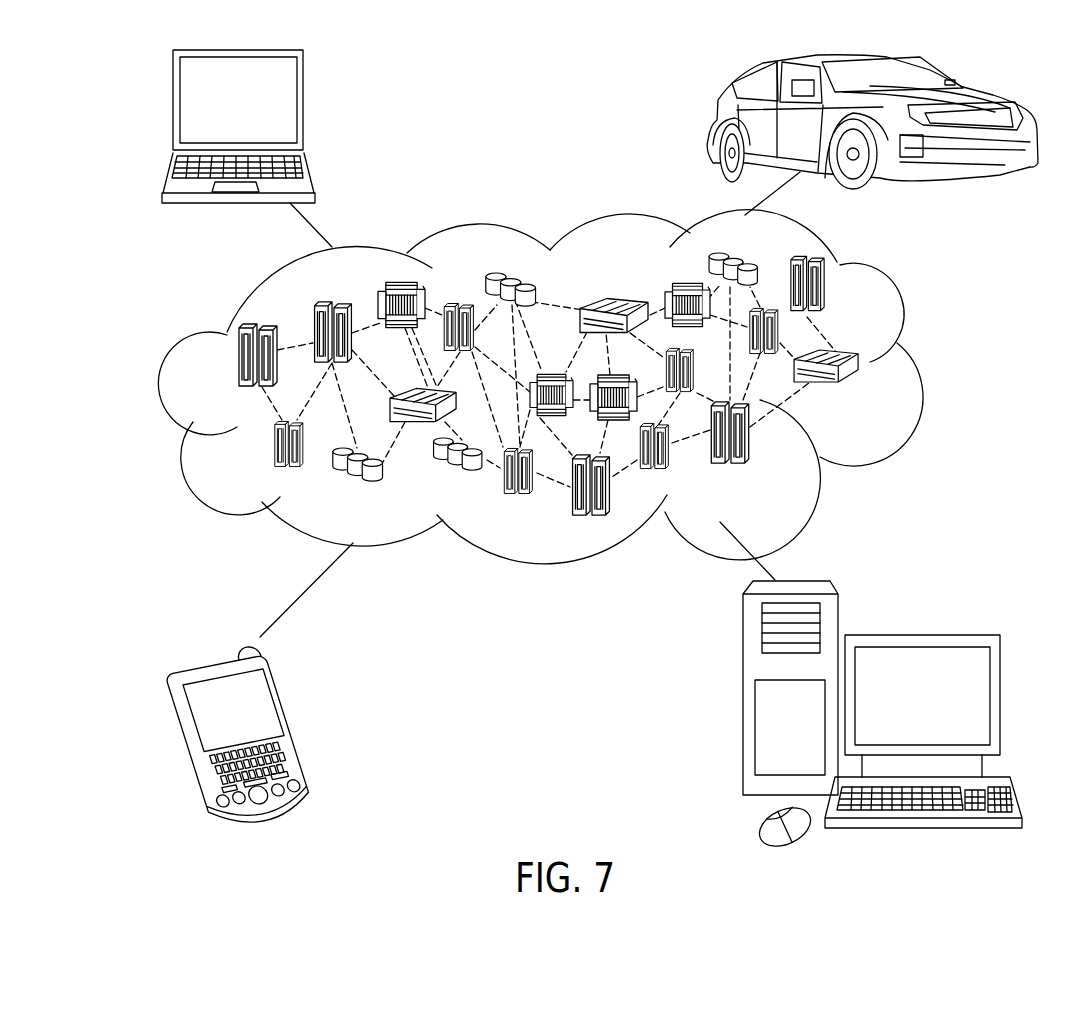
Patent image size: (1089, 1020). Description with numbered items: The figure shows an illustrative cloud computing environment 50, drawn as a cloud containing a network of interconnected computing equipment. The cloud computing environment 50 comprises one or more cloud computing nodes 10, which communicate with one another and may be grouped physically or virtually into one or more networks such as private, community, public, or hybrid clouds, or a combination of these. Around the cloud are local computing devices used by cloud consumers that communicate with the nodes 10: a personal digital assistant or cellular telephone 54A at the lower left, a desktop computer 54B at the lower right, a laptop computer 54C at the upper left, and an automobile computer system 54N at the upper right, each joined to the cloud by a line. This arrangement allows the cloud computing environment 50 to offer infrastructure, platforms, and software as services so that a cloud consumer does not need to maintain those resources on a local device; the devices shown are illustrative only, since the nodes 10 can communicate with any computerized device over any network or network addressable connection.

The laptop computer 54C is at (303, 104).
The automobile computer system 54N is at (713, 122).
The personal digital assistant (PDA) or cellular telephone 54A is at (290, 723).
The desktop computer 54B is at (918, 633).
The cloud computing environment 50 is at (918, 366).
The cloud computing node 10 is at (867, 393).